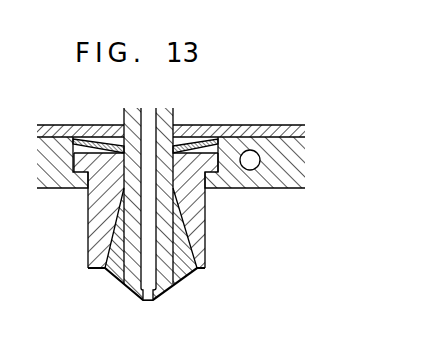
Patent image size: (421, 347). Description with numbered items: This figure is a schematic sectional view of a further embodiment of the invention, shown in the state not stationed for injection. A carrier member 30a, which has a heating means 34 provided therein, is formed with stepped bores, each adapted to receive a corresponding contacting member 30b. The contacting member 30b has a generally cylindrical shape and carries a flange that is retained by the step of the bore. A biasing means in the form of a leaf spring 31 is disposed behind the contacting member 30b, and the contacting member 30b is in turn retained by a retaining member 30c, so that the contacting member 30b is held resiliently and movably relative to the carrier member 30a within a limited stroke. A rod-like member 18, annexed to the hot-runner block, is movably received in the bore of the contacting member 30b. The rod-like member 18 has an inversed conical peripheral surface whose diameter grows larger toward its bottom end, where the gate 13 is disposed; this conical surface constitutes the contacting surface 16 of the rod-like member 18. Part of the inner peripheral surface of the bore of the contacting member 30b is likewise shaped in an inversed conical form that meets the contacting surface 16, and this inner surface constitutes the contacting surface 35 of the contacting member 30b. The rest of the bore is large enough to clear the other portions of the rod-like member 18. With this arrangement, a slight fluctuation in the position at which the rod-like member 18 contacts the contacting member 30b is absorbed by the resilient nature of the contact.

The gate 13 is at (150, 302).
The contacting surface 16 is at (204, 268).
The rod-like member 18 is at (163, 112).
The carrier member 30a is at (297, 152).
The contacting member 30b is at (205, 213).
The retaining member 30c is at (243, 130).
The leaf spring 31 is at (186, 143).
The heating means 34 is at (256, 168).
The contacting surface 35 is at (183, 240).